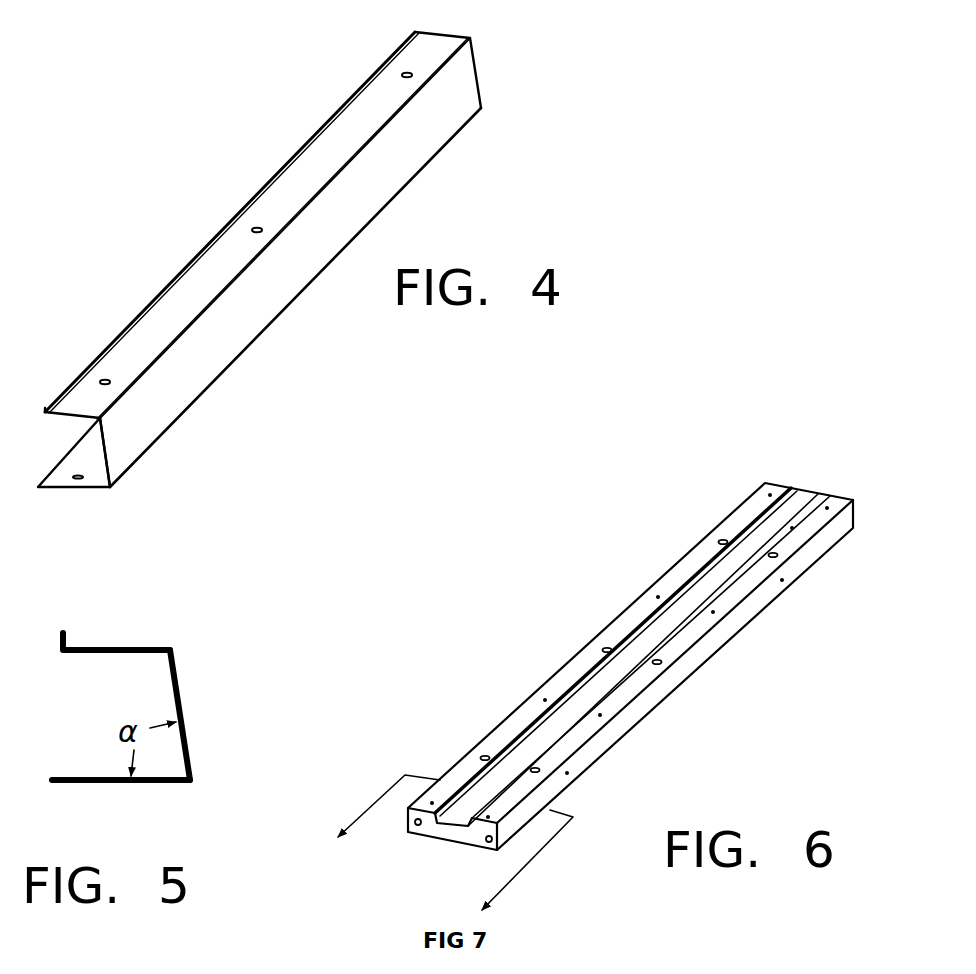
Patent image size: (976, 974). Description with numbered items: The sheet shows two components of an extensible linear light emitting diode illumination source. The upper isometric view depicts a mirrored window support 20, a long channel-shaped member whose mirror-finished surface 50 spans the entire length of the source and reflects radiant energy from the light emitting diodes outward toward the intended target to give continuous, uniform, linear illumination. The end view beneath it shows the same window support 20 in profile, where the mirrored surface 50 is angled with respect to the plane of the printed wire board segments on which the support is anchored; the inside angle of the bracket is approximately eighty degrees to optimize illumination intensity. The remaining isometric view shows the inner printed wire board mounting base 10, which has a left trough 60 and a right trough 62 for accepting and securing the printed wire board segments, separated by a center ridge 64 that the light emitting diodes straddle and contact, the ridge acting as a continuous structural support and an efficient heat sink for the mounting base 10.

In FIG. 6, the inner printed wire board mounting base 10 is at (715, 525).
In FIG. 4, the left mirrored window support 20 is at (175, 420).
In FIG. 5, the left mirrored window support 20 is at (102, 645).
In FIG. 4, the mirror-finished surface 50 is at (248, 326).
In FIG. 5, the mirror-finished surface 50 is at (177, 678).
In FIG. 6, the left trough 60 is at (528, 737).
In FIG. 6, the right trough 62 is at (607, 692).
In FIG. 6, the center ridge 64 is at (707, 587).